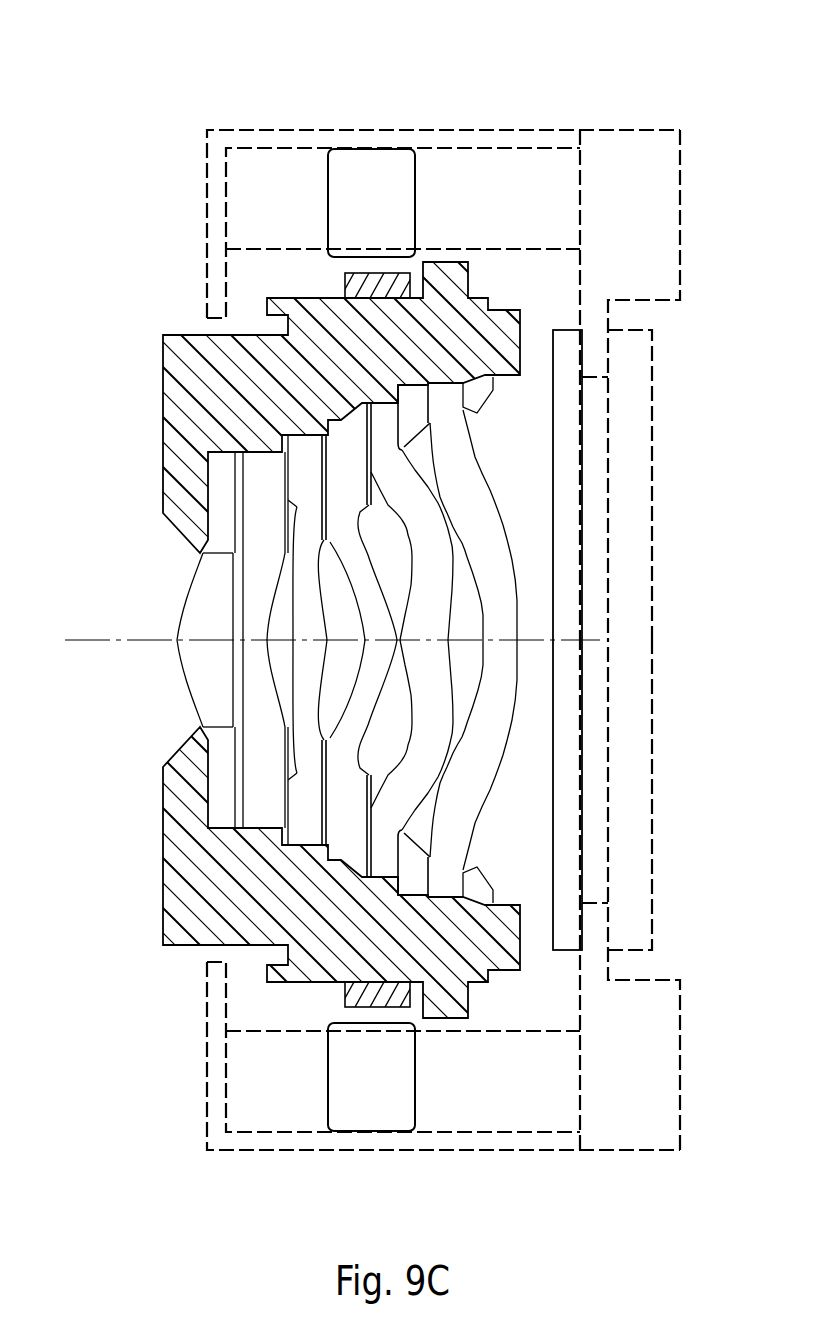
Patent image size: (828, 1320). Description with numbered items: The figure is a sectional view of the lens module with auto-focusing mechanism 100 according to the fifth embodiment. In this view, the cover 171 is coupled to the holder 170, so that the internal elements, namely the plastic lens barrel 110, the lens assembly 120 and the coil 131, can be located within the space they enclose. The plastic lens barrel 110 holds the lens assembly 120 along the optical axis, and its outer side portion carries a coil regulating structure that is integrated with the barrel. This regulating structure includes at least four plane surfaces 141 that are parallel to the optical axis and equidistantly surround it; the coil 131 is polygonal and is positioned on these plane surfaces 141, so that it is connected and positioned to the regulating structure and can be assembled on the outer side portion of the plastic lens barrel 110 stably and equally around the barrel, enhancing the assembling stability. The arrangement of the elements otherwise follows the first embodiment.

The lens module with auto-focusing mechanism 100 is at (147, 33).
The plastic lens barrel 110 is at (195, 408).
The lens assembly 120 is at (195, 612).
The coil 131 is at (324, 268).
The plane surfaces 141 is at (345, 286).
The holder 170 is at (651, 128).
The cover 171 is at (510, 128).